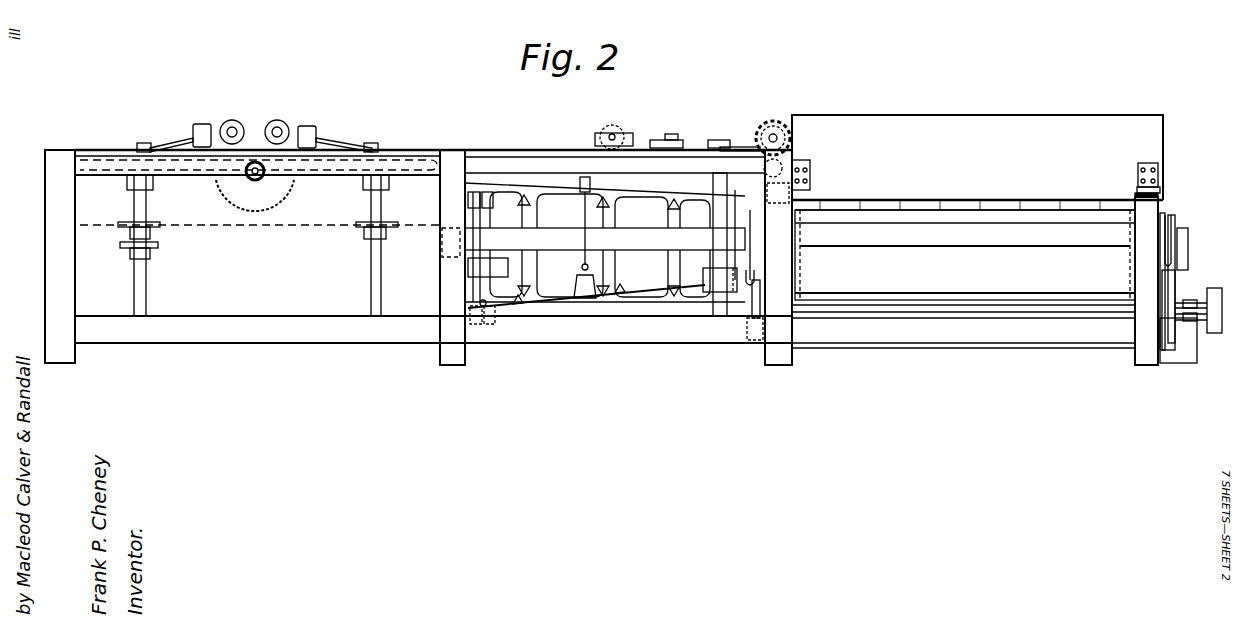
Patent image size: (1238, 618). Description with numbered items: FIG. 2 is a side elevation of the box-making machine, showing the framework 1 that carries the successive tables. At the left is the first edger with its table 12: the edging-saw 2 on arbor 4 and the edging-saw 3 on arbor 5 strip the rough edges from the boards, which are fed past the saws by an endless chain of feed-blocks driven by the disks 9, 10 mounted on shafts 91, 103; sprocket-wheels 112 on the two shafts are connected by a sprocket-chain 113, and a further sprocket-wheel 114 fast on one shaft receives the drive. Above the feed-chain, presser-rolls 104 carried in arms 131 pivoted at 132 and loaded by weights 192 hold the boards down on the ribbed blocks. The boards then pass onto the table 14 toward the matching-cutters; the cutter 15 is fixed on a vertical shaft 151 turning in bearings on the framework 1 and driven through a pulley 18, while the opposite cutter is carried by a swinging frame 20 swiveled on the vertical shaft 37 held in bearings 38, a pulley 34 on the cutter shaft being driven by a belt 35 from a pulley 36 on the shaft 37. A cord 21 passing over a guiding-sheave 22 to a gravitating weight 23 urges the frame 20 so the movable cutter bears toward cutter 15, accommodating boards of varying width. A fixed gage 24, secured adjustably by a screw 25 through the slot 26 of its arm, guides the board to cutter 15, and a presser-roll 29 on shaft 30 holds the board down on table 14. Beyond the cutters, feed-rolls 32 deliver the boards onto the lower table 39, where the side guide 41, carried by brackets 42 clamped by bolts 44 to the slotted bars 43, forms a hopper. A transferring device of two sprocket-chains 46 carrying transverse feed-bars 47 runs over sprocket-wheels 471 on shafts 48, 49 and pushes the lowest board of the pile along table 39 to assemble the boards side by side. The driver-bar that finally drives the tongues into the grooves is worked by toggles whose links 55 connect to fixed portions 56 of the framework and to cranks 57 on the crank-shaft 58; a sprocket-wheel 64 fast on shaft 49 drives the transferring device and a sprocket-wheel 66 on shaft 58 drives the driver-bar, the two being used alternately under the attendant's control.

The framework 1 is at (57, 183).
The edging-saw 2 is at (258, 120).
The edging-saw 3 is at (253, 191).
The arbor or shaft 4 is at (245, 178).
The arbor or shaft 5 is at (268, 175).
The disk 9 is at (100, 172).
The disk 10 is at (392, 170).
The table or platform of the first edger 12 is at (435, 150).
The table or platform 14 is at (552, 160).
The matching-cutter 15 is at (740, 145).
The pulley 18 is at (700, 283).
The frame 20 is at (516, 305).
The cord 21 is at (583, 213).
The guiding-sheave 22 is at (672, 140).
The gravitating weight 23 is at (587, 300).
The fixed gage 24 is at (716, 138).
The screw or bolt 25 is at (672, 130).
The slot 26 is at (672, 150).
The presser-roll 29 is at (607, 125).
The shaft 30 is at (615, 125).
The feed-rolls 32 is at (780, 125).
The pulley 34 is at (805, 166).
The belt 35 is at (632, 252).
The pulley 36 is at (445, 258).
The vertical shaft 37 is at (470, 215).
The bearings 38 is at (478, 190).
The table 39 is at (965, 208).
The side guide 41 is at (985, 130).
The brackets 42 is at (812, 172).
The bars 43 is at (810, 192).
The bolts 44 is at (808, 175).
The sprocket-chains 46 is at (802, 236).
The feed-bars 47 is at (1020, 210).
The sprocket-wheels 471 is at (800, 270).
The shaft 48 is at (900, 245).
The shaft 49 is at (1176, 270).
The toggle links 55 is at (752, 342).
The fixed portions of the framework 56 is at (1165, 215).
The cranks 57 is at (745, 300).
The crank-shaft 58 is at (1025, 312).
The band-pulley or sprocket-wheel 64 is at (1182, 238).
The band-pulley or sprocket-wheel 66 is at (1212, 335).
The shaft 91 is at (148, 275).
The shaft 103 is at (370, 275).
The presser-rolls 104 is at (228, 118).
The sprocket-wheels 112 is at (125, 226).
The sprocket-chain 113 is at (232, 224).
The sprocket-wheel 114 is at (126, 246).
The arms 131 is at (372, 104).
The pivots 132 is at (140, 145).
The shaft 151 is at (715, 310).
The weights 192 is at (203, 122).